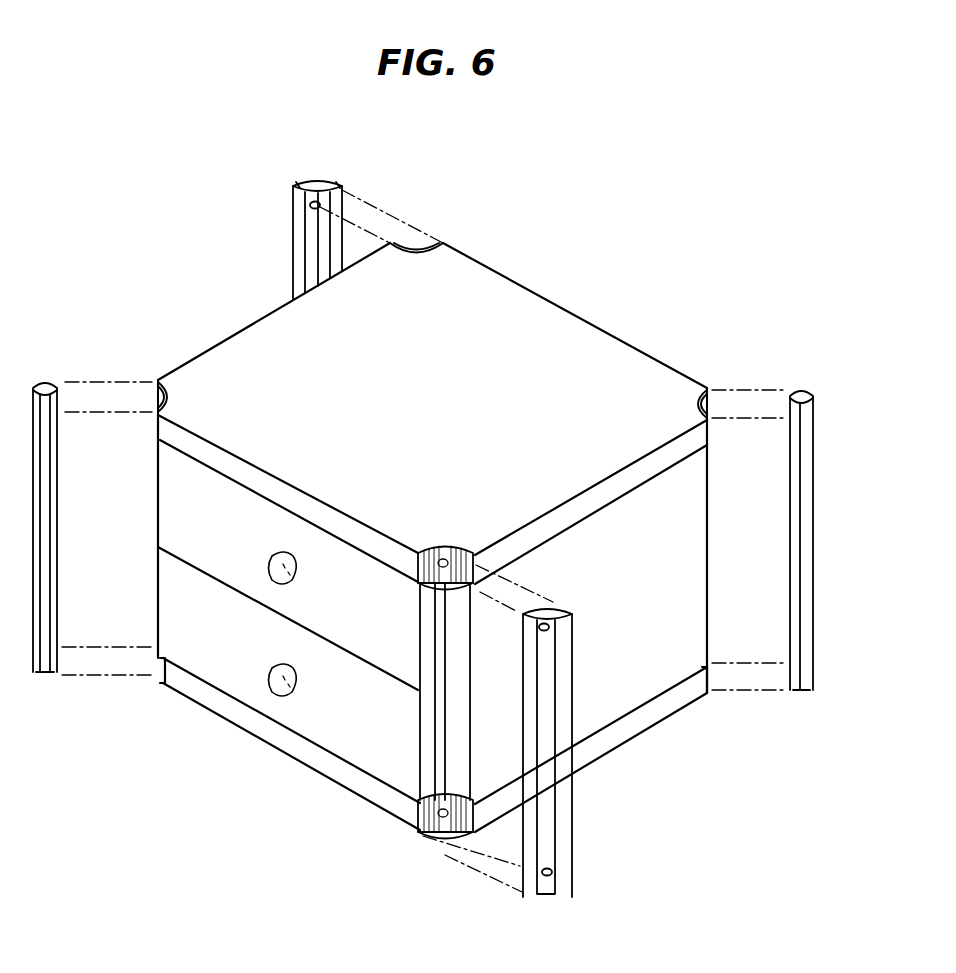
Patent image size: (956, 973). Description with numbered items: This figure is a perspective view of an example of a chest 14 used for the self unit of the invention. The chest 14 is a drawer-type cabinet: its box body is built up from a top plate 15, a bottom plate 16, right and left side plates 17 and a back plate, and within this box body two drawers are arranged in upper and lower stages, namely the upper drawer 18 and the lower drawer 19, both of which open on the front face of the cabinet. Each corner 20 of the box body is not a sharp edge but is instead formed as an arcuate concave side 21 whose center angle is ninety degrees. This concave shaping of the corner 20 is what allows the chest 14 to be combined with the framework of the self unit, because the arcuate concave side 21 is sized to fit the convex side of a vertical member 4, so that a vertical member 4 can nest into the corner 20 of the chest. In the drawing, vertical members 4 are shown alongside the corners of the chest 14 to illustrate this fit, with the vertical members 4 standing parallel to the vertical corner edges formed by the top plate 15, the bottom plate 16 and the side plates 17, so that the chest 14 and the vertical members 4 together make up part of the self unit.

The vertical member 4 is at (292, 218).
The chest 14 is at (508, 268).
The top plate 15 is at (303, 350).
The bottom plate 16 is at (627, 743).
The side plate 17 is at (615, 667).
The drawer 18 is at (315, 600).
The drawer 19 is at (323, 708).
The corner 20 is at (442, 212).
The arcuate concave side 21 is at (455, 742).